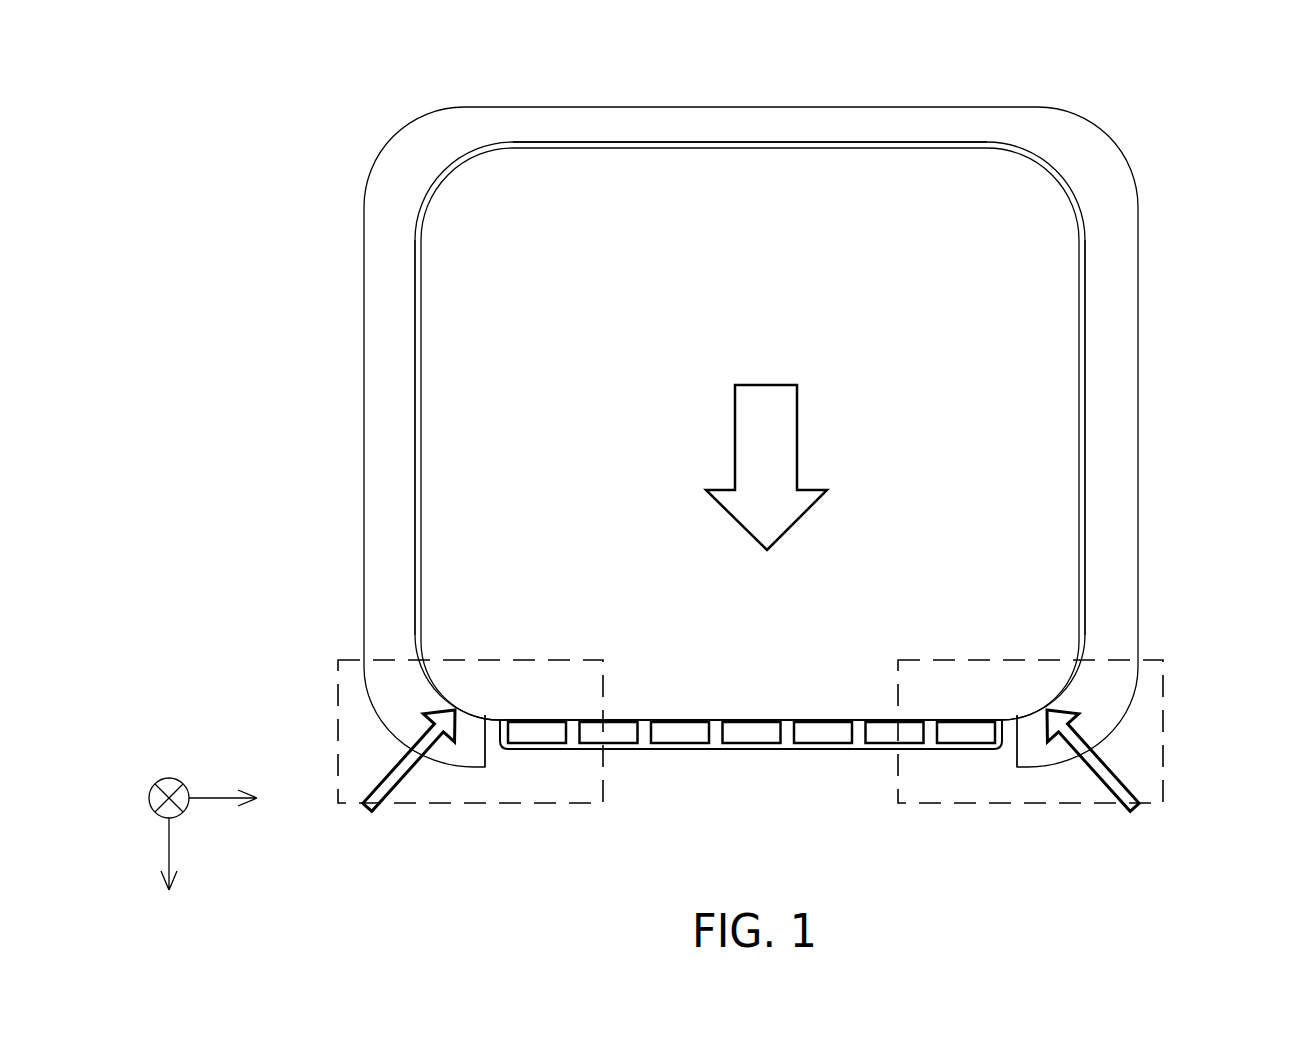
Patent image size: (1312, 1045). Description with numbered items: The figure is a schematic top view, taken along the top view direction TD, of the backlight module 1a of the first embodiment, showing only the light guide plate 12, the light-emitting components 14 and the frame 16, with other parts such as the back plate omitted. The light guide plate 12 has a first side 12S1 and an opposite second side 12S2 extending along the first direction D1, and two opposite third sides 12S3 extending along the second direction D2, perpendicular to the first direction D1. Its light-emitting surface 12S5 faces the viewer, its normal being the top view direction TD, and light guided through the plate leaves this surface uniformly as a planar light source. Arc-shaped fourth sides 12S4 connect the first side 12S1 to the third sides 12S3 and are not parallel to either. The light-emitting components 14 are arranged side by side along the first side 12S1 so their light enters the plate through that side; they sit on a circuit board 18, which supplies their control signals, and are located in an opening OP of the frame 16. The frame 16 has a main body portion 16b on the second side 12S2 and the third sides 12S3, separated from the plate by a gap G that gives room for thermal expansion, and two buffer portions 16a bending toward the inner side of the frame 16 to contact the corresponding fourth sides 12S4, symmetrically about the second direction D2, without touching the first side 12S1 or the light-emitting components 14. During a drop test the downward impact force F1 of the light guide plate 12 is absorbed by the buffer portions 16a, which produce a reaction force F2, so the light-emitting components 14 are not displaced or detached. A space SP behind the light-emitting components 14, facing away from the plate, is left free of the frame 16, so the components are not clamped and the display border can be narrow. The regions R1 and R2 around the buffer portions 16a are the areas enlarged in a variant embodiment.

The backlight module 1a is at (1200, 105).
The light guide plate 12 is at (750, 449).
The first side 12S1 is at (717, 722).
The second side 12S2 is at (693, 148).
The third sides 12S3 is at (422, 399).
The fourth side 12S4 is at (480, 718).
The light-emitting surface 12S5 is at (1027, 303).
The light-emitting components 14 is at (535, 737).
The frame 16 is at (753, 445).
The buffer portion 16a is at (450, 750).
The main body portion 16b is at (837, 127).
The circuit board 18 is at (785, 740).
The gap G is at (420, 264).
The opening OP is at (652, 763).
The space SP is at (757, 790).
The impact force F1 is at (787, 430).
The reaction force F2 is at (380, 773).
The region R1 is at (1163, 697).
The region R2 is at (338, 693).
The top view direction TD is at (169, 780).
The first direction D1 is at (223, 814).
The second direction D2 is at (189, 858).